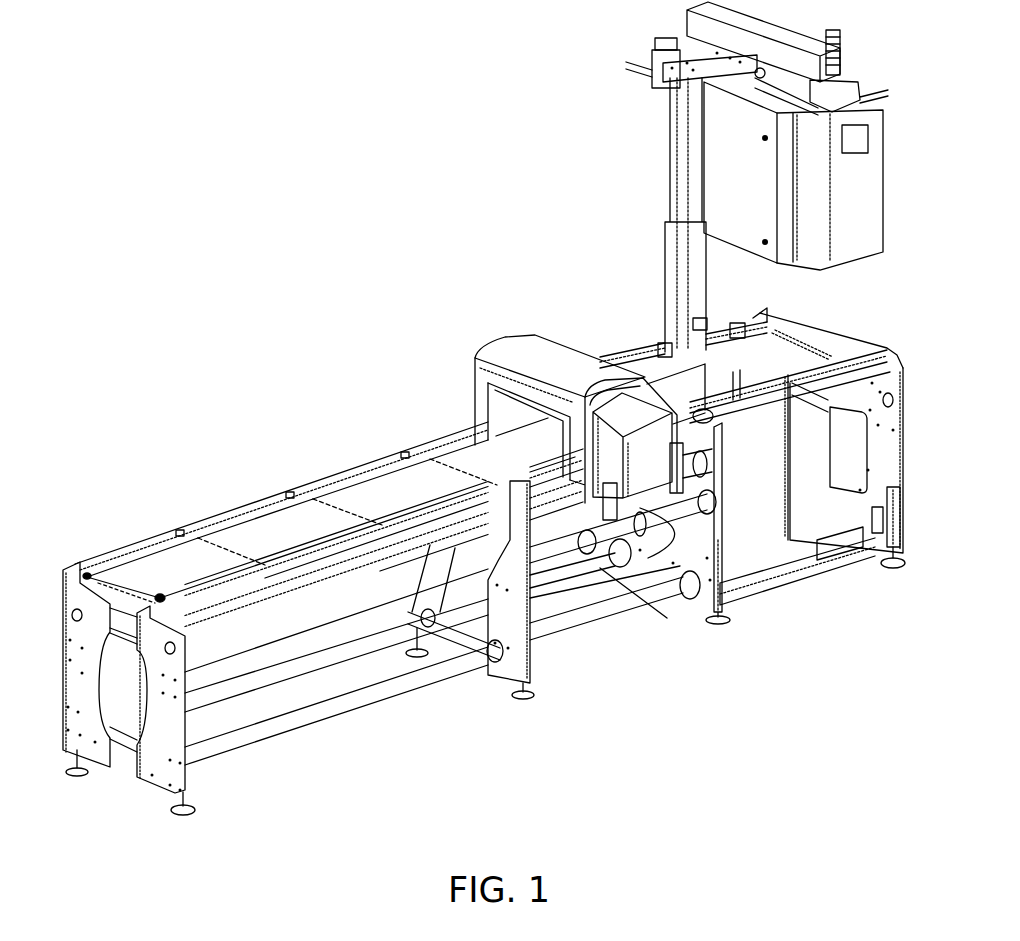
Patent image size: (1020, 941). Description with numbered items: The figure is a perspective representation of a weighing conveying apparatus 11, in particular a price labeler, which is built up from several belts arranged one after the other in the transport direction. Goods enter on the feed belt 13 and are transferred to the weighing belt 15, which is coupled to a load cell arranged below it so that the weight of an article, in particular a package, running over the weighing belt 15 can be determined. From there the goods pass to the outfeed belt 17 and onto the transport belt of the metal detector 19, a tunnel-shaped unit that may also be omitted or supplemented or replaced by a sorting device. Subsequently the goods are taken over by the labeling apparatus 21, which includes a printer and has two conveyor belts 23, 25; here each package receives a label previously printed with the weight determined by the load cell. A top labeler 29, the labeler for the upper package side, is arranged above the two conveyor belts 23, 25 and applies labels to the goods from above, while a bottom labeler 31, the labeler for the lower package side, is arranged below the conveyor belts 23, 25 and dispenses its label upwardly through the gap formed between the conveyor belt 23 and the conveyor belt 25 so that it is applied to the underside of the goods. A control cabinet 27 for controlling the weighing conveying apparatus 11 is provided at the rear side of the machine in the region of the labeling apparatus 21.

The weighing conveying apparatus 11 is at (321, 241).
The feed belt 13 is at (170, 563).
The weighing belt 15 is at (282, 523).
The outfeed belt 17 is at (394, 487).
The metal detector 19 is at (476, 342).
The labeling apparatus 21 is at (614, 246).
The conveyor belt 23 is at (737, 377).
The conveyor belt 25 is at (832, 342).
The control cabinet 27 is at (618, 345).
The top labeler 29 is at (738, 180).
The bottom labeler 31 is at (770, 453).